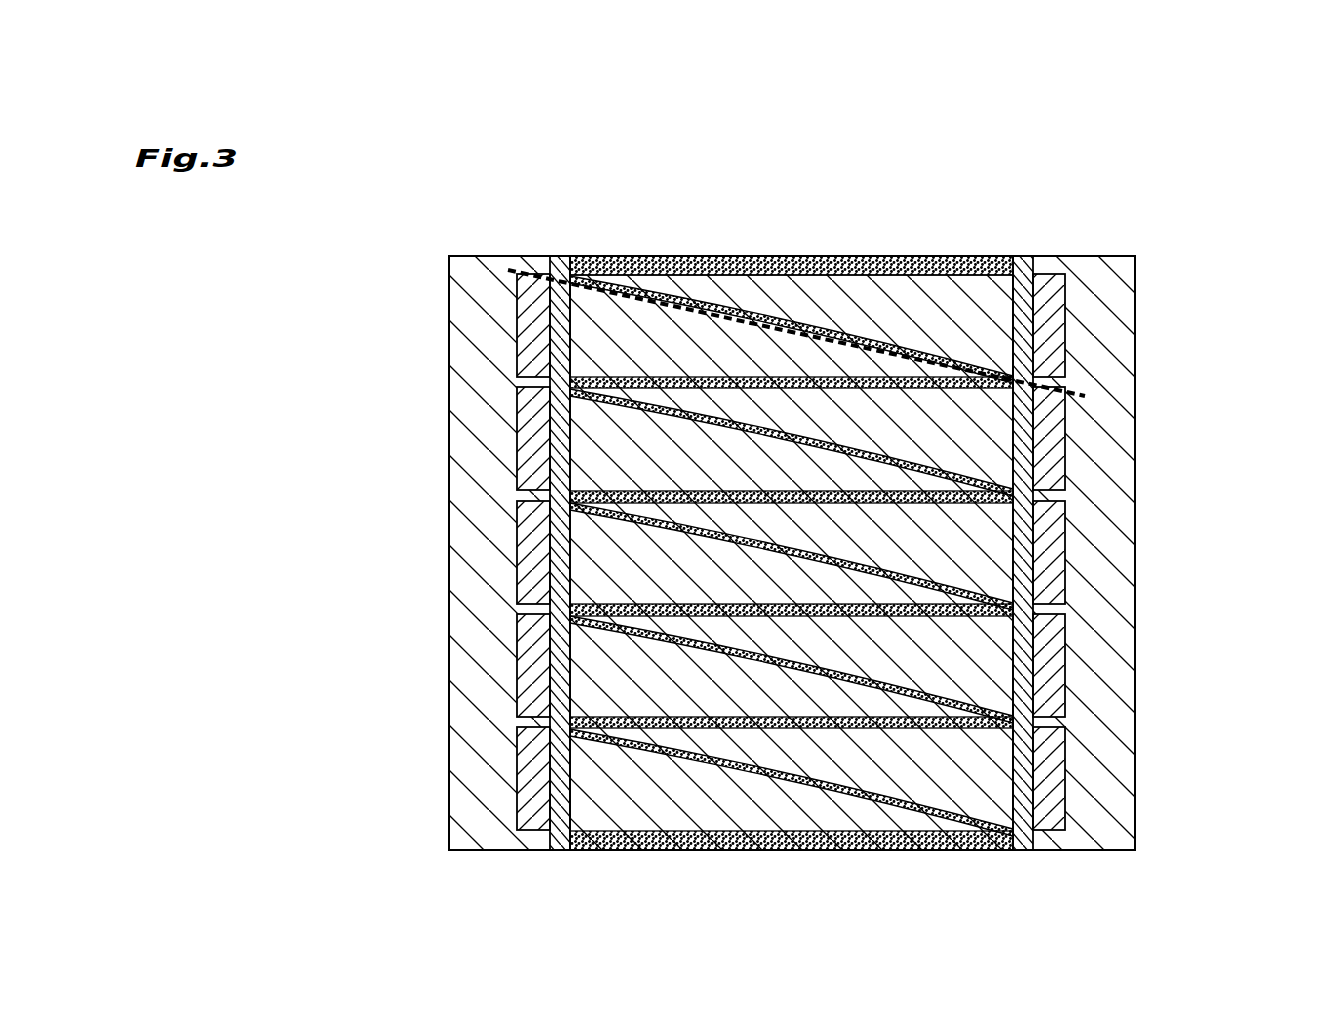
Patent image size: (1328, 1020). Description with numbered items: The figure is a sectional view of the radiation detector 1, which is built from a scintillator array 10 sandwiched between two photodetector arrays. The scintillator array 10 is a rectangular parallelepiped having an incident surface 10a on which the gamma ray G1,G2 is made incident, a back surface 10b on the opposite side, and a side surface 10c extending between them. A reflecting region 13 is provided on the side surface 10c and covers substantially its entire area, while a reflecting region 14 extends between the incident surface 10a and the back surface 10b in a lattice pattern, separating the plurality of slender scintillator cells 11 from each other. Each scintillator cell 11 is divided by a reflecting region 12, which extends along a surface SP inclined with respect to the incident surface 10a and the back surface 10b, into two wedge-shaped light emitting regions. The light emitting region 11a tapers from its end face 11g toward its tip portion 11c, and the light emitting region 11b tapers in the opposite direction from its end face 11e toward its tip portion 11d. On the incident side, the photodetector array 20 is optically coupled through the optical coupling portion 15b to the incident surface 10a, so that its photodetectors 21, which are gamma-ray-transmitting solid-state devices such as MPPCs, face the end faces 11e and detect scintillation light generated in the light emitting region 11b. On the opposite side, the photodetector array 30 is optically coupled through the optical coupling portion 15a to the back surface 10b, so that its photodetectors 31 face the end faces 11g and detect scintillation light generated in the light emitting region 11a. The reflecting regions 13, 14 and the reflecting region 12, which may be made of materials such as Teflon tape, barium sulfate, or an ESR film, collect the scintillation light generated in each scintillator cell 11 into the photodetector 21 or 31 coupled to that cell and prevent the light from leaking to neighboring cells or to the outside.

The radiation detector 1 is at (1218, 219).
The scintillator array 10 is at (715, 257).
The incident surface 10a is at (568, 795).
The back surface 10b is at (1027, 790).
The side surface 10c is at (762, 257).
The scintillator cell 11 is at (990, 194).
The light emitting region 11a is at (857, 303).
The light emitting region 11b is at (890, 350).
The tip portion 11c is at (580, 262).
The tip portion 11d is at (1053, 380).
The end face 11e is at (572, 322).
The end face 11g is at (1013, 302).
The reflecting region 12 is at (960, 355).
The reflecting region 13 is at (623, 262).
The reflecting region 14 is at (1015, 387).
The optical coupling portion 15a is at (1022, 267).
The optical coupling portion 15b is at (562, 257).
The photodetector array 20 is at (483, 256).
The photodetector 21 is at (533, 331).
The photodetector array 30 is at (1095, 257).
The photodetector 31 is at (1050, 330).
The surface SP is at (512, 268).
The gamma ray G1,G2 is at (318, 544).